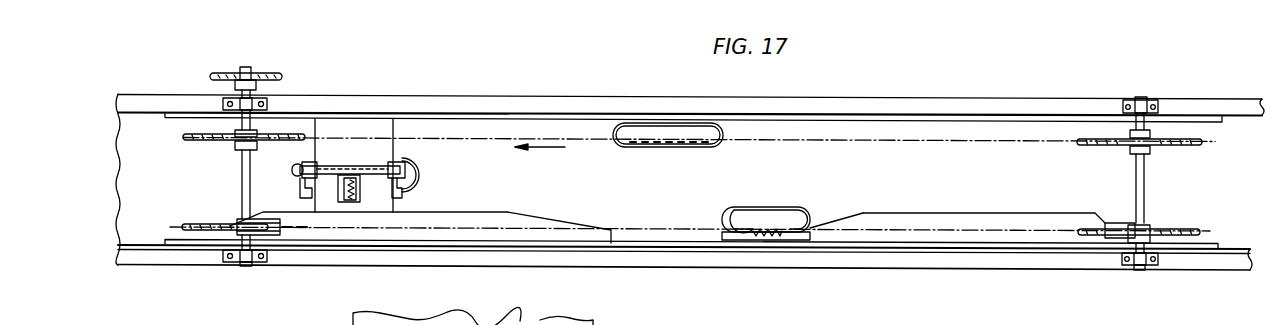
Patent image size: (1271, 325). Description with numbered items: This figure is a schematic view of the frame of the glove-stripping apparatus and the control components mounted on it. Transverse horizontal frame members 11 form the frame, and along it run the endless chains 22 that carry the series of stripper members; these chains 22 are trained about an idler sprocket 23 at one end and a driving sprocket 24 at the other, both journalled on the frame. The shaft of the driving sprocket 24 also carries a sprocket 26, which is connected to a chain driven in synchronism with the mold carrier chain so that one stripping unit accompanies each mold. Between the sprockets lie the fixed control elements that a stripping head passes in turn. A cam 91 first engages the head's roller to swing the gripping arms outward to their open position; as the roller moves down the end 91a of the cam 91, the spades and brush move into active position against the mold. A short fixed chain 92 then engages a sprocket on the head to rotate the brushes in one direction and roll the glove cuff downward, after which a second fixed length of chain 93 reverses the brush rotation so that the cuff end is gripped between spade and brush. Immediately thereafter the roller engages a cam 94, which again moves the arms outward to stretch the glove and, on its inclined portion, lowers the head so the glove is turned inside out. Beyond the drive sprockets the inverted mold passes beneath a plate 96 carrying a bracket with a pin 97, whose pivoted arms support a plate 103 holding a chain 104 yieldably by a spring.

The transverse horizontal frame member 11 is at (872, 100).
The endless chain 22 is at (952, 145).
The idler sprocket 23 is at (1180, 147).
The driving sprocket 24 is at (200, 224).
The sprocket 26 is at (283, 77).
The cam 91 is at (1010, 213).
The end of cam 91a is at (845, 218).
The fixed chain 92 is at (760, 207).
The second fixed length of chain 93 is at (678, 148).
The cam 94 is at (506, 213).
The plate 96 is at (387, 152).
The pin 97 is at (372, 168).
The support plate 103 is at (295, 175).
The chain 104 is at (421, 175).